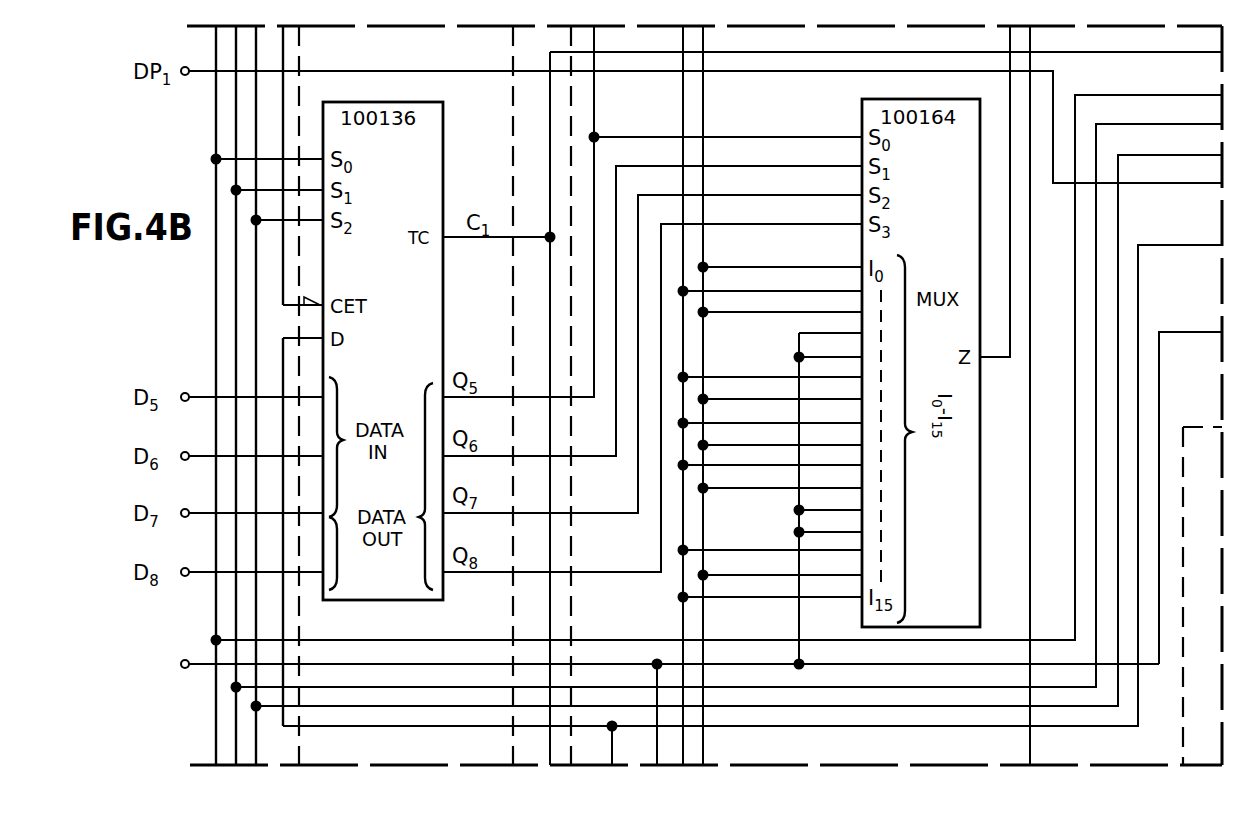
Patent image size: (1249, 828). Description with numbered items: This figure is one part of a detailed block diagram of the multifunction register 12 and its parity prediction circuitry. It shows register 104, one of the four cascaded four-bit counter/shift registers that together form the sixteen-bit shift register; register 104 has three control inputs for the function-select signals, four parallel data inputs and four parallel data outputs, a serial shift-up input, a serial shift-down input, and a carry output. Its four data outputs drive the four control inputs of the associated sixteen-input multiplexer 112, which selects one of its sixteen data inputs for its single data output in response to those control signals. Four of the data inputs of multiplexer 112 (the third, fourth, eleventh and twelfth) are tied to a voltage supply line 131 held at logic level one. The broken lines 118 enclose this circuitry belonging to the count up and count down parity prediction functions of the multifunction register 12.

The multifunction register 12 is at (300, 56).
The register 104 is at (443, 157).
The broken lines 118 is at (571, 111).
The multiplexer 112 is at (862, 119).
The voltage supply line 131 is at (200, 663).